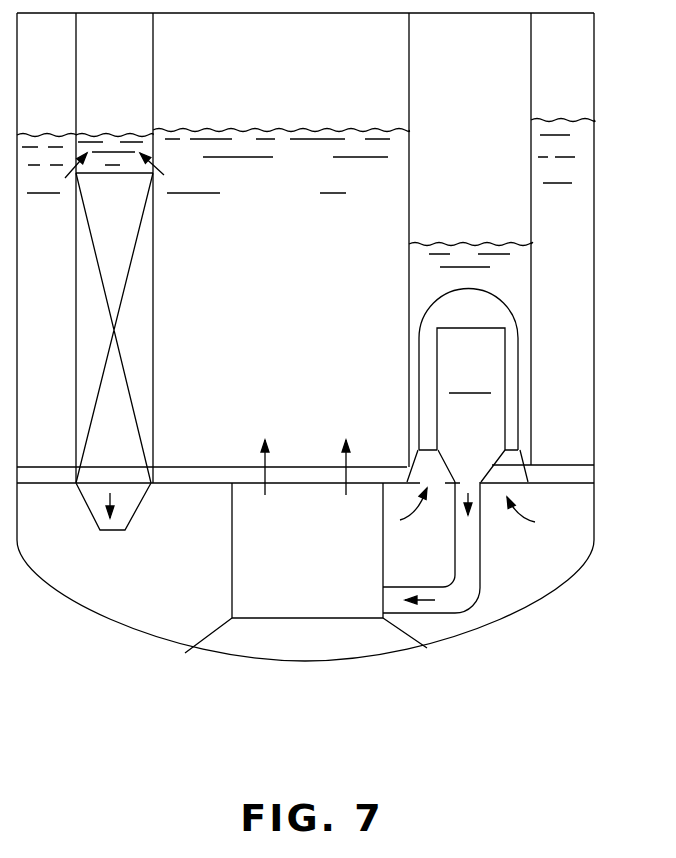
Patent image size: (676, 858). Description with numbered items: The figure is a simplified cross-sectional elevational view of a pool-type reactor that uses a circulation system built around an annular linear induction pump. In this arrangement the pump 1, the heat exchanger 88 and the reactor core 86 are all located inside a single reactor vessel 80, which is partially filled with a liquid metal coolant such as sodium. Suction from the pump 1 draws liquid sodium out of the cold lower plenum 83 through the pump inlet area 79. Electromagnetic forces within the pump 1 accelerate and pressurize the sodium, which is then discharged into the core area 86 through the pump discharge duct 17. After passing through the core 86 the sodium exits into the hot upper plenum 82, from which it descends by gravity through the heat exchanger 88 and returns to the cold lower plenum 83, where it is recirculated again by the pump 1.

The annular linear induction pump 1 is at (463, 378).
The pump discharge duct 17 is at (458, 582).
The pump inlet area 79 is at (513, 478).
The reactor vessel 80 is at (594, 313).
The hot upper plenum 82 is at (277, 290).
The cold lower plenum 83 is at (146, 588).
The reactor core 86 is at (292, 554).
The heat exchanger 88 is at (100, 213).